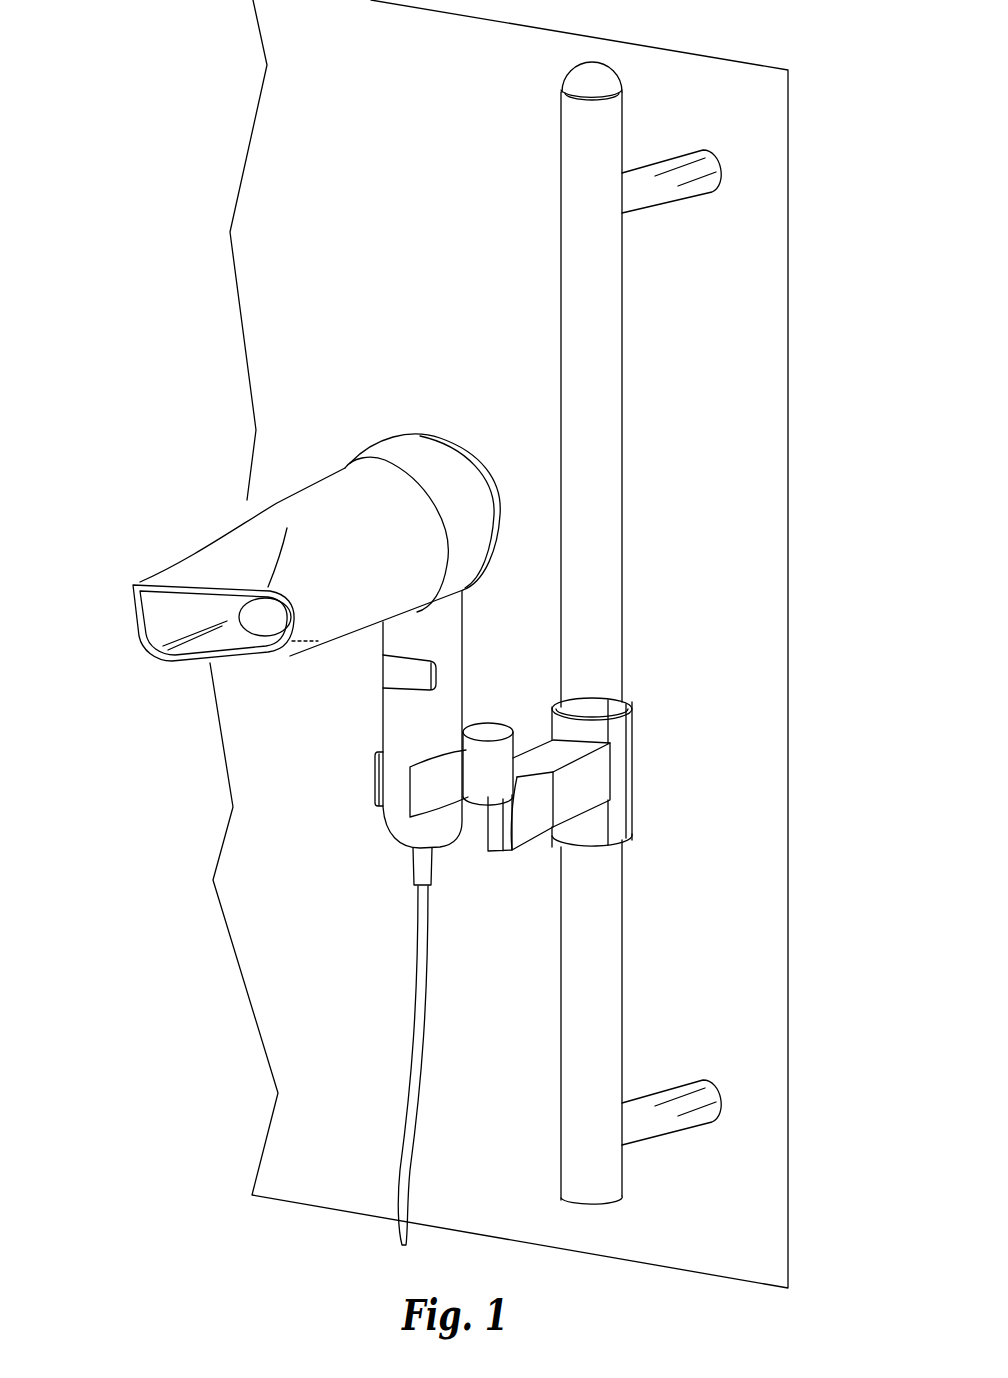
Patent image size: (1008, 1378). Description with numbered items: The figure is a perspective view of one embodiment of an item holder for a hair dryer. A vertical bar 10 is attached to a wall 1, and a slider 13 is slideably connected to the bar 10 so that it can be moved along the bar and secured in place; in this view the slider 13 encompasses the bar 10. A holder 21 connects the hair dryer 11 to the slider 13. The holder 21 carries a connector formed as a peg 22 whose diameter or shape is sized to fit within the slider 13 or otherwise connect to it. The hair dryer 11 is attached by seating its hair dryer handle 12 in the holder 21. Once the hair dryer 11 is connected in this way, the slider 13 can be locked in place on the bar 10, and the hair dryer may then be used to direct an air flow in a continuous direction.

The wall 1 is at (728, 465).
The vertical bar 10 is at (605, 132).
The hair dryer 11 is at (293, 483).
The hair dryer handle 12 is at (430, 727).
The slider 13 is at (598, 783).
The holder 21 is at (442, 780).
The peg 22 is at (478, 832).